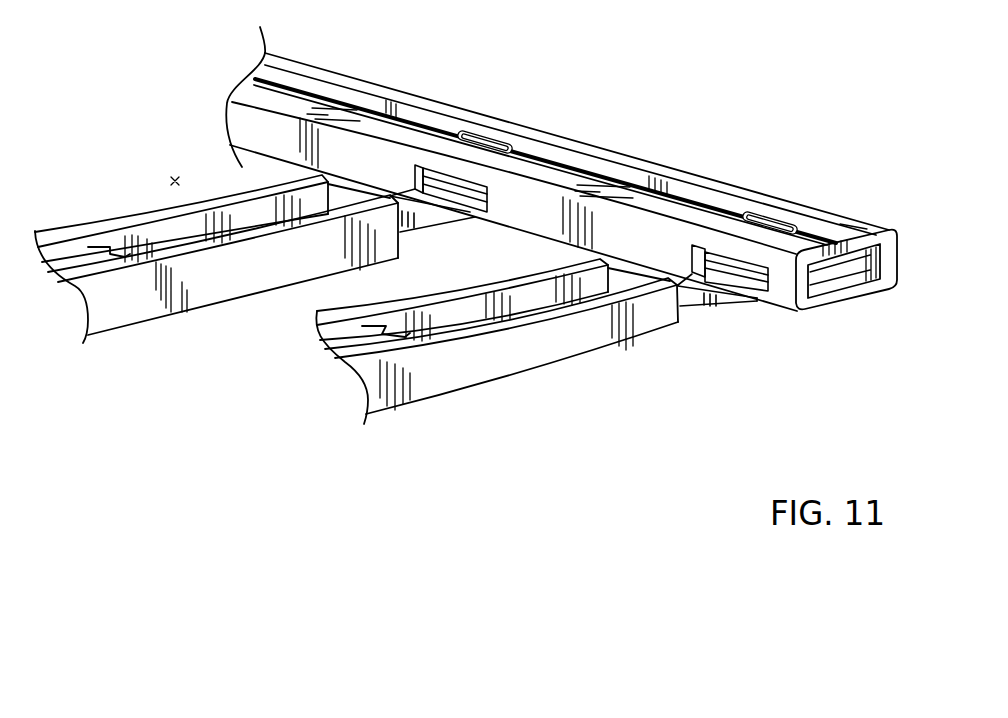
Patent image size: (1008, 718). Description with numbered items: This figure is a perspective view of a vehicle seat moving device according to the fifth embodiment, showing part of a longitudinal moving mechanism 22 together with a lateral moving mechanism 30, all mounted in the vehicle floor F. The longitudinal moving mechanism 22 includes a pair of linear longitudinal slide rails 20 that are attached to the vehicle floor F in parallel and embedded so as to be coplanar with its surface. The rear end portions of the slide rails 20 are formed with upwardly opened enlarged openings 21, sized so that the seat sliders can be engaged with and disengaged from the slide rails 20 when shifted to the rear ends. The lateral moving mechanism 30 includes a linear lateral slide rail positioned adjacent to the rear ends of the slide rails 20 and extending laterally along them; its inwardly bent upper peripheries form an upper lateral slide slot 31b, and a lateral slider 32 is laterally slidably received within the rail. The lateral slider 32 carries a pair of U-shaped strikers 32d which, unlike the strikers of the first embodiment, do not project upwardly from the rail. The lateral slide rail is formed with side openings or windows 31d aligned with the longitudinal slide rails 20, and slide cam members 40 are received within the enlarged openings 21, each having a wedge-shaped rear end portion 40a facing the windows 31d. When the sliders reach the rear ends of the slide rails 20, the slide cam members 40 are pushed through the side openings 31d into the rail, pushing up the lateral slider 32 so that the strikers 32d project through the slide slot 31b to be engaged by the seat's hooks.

The longitudinal slide rail 20 is at (246, 274).
The enlarged opening 21 is at (253, 218).
The longitudinal moving mechanism 22 is at (513, 385).
The lateral moving mechanism 30 is at (480, 99).
The upper lateral slide slot 31b is at (618, 186).
The side opening 31d is at (433, 188).
The lateral slider 32 is at (674, 188).
The striker 32d is at (494, 152).
The slide cam member 40 is at (426, 223).
The wedge-shaped rear end portion 40a is at (741, 298).
The vehicle floor F is at (168, 179).